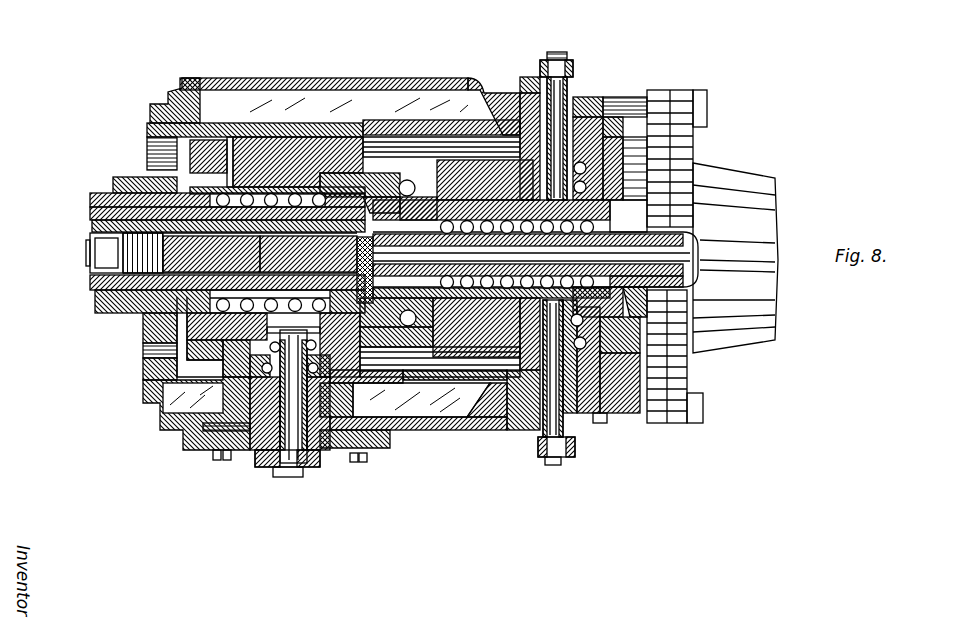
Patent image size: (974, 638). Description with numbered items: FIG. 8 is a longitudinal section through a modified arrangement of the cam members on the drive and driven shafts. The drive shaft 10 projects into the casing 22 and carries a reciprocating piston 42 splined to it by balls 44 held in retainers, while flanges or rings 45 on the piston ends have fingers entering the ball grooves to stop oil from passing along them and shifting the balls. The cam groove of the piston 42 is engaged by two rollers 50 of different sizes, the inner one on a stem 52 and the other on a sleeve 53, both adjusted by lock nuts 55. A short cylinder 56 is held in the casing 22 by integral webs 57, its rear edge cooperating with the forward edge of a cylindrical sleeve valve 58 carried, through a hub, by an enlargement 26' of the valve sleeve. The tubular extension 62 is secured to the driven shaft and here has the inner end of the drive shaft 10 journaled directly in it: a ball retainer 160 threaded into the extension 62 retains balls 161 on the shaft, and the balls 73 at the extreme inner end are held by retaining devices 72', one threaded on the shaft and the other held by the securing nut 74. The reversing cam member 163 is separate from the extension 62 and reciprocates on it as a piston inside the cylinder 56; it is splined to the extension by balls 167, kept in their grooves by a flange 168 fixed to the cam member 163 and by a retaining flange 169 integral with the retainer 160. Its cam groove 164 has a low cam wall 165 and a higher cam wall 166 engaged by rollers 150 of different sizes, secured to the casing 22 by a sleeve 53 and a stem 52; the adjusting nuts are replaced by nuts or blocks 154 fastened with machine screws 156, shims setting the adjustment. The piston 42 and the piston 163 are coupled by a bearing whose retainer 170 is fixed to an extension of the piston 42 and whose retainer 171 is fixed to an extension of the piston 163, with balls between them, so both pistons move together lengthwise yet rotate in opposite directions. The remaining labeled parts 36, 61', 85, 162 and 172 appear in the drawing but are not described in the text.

The drive shaft 10 is at (90, 247).
The casing 22 is at (308, 78).
The enlargement of the valve sleeve 26' is at (118, 181).
The casing 36 is at (383, 455).
The reciprocating piston 42 is at (486, 178).
The balls 44 is at (593, 244).
The flanges or rings 45 is at (628, 222).
The rollers 50 is at (612, 175).
The stem 52 is at (293, 470).
The sleeve 53 is at (253, 437).
The lock nuts 55 is at (325, 455).
The short cylinder 56 is at (417, 97).
The integral webs 57 is at (460, 98).
The cylindrical sleeve valve 58 is at (150, 132).
The ring 61' is at (137, 333).
The tubular extension 62 is at (90, 203).
The retaining devices 72' is at (201, 294).
The balls 73 is at (123, 225).
The securing nut 74 is at (104, 253).
The spring 85 is at (145, 357).
The rollers 150 is at (262, 347).
The nuts or blocks 154 is at (213, 438).
The machine screws 156 is at (220, 460).
The ball retainer 160 is at (345, 270).
The balls 161 is at (307, 254).
The shaft portion 162 is at (211, 254).
The reversing cam member 163 is at (340, 140).
The cam groove 164 is at (270, 130).
The low cam wall 165 is at (213, 167).
The higher cam wall 166 is at (225, 170).
The balls 167 is at (262, 188).
The special flange 168 is at (150, 163).
The retaining flange 169 is at (398, 187).
The retainer 170 is at (362, 350).
The retainer 171 is at (418, 344).
The ball bearing 172 is at (417, 318).